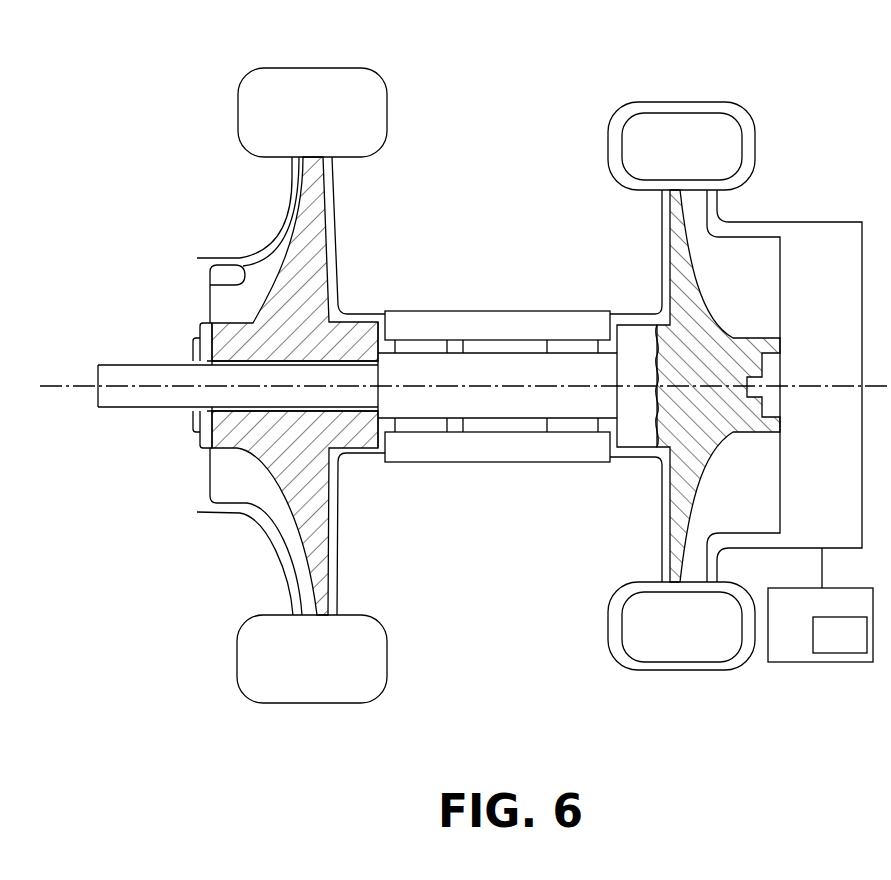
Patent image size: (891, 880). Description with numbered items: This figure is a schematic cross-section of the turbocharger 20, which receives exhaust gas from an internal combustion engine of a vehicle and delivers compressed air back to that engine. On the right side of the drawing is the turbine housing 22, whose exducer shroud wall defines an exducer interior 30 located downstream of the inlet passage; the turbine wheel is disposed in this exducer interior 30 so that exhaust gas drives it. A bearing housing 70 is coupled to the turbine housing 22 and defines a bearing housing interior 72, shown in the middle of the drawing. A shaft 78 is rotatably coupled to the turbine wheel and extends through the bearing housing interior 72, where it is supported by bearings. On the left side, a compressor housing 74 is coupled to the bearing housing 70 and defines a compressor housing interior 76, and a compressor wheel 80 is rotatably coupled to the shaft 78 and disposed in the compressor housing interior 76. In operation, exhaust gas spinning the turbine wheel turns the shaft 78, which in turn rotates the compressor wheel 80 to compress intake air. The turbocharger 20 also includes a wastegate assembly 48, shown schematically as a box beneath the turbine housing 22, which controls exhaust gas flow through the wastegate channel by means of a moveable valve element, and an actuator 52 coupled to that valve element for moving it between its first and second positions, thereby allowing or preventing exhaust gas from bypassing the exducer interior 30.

The turbocharger 20 is at (163, 143).
The turbine housing 22 is at (757, 147).
The exducer interior 30 is at (715, 217).
The wastegate assembly 48 is at (820, 605).
The actuator 52 is at (840, 635).
The bearing housing 70 is at (425, 320).
The bearing housing interior 72 is at (458, 340).
The compressor housing 74 is at (292, 178).
The compressor housing interior 76 is at (210, 287).
The shaft 78 is at (463, 432).
The compressor wheel 80 is at (222, 433).